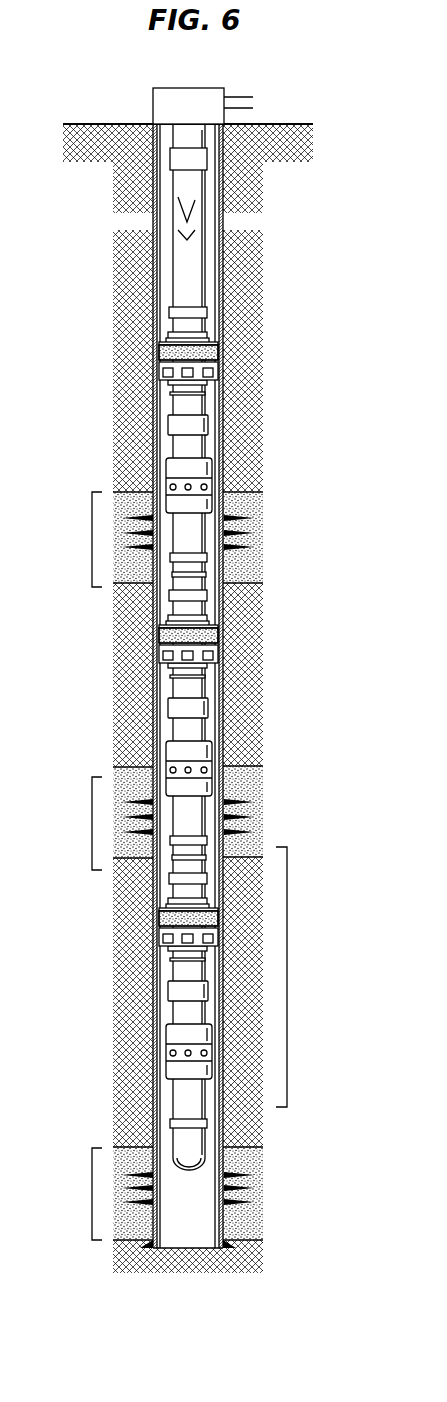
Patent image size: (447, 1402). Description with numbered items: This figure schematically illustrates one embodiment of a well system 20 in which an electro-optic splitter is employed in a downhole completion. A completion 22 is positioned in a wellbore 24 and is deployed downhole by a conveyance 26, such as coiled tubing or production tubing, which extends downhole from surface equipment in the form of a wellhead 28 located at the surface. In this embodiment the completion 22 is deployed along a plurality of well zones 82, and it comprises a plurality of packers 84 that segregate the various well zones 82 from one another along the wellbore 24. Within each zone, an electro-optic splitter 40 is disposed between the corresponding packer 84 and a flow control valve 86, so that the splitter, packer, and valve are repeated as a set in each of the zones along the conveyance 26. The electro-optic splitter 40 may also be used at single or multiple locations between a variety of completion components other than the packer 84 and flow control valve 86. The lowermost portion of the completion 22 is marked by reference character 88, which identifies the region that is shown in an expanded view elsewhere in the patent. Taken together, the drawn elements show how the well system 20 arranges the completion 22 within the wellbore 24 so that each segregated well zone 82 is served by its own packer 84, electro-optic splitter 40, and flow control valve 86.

The well system 20 is at (124, 80).
The completion 22 is at (217, 281).
The wellbore 24 is at (164, 296).
The conveyance 26 is at (193, 185).
The wellhead 28 is at (199, 88).
The electro-optic splitter 40 is at (200, 423).
The well zones 82 is at (90, 540).
The packers 84 is at (212, 353).
The flow control valve 86 is at (175, 470).
The portion of completion 88 is at (287, 978).